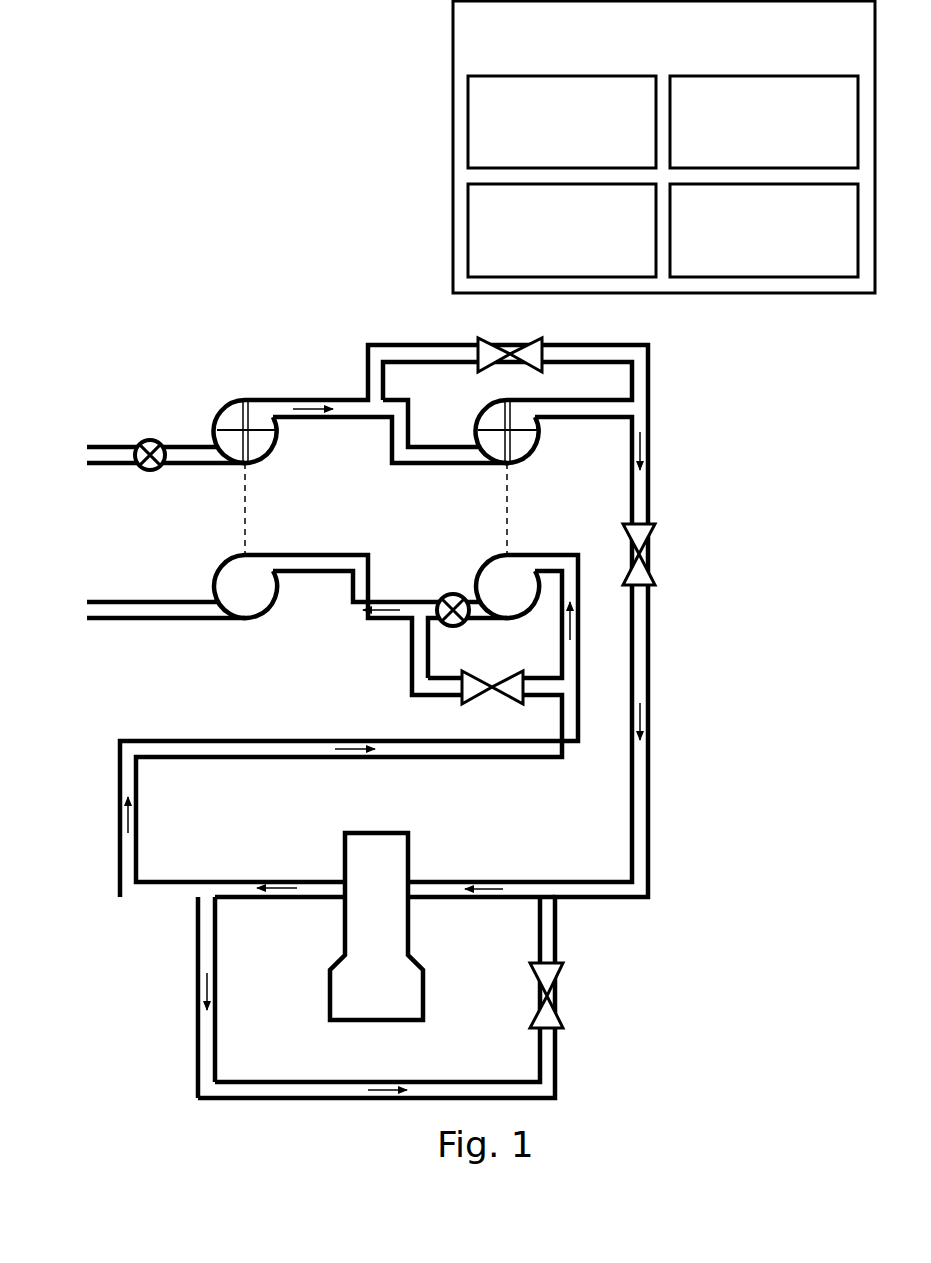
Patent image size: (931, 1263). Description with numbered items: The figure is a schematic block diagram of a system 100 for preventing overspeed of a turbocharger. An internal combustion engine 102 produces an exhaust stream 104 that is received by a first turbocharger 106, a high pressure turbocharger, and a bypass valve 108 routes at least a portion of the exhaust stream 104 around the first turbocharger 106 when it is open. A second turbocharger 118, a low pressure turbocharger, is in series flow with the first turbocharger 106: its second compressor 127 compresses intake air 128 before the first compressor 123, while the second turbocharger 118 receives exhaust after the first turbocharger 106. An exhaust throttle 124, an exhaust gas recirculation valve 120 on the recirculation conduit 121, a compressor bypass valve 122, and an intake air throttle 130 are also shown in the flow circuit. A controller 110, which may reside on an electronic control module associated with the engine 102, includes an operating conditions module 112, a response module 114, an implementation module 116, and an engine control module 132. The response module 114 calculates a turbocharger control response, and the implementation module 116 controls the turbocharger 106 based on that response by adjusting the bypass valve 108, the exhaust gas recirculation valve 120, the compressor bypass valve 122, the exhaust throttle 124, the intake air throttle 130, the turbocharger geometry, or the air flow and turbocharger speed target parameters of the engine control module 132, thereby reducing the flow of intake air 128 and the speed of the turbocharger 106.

The system 100 is at (88, 61).
The internal combustion engine 102 is at (372, 833).
The exhaust stream 104 is at (38, 610).
The first turbocharger 106 is at (487, 558).
The bypass valve 108 is at (497, 672).
The controller 110 is at (531, 66).
The operating conditions module 112 is at (549, 151).
The response module 114 is at (549, 250).
The implementation module 116 is at (751, 151).
The second turbocharger 118 is at (218, 563).
The exhaust gas recirculation valve 120 is at (563, 967).
The EGR conduit 121 is at (202, 982).
The compressor bypass valve 122 is at (480, 340).
The first compressor 123 is at (532, 450).
The exhaust throttle 124 is at (440, 597).
The second compressor 127 is at (227, 400).
The intake air 128 is at (75, 455).
The intake air throttle 130 is at (148, 438).
The engine control module 132 is at (751, 250).